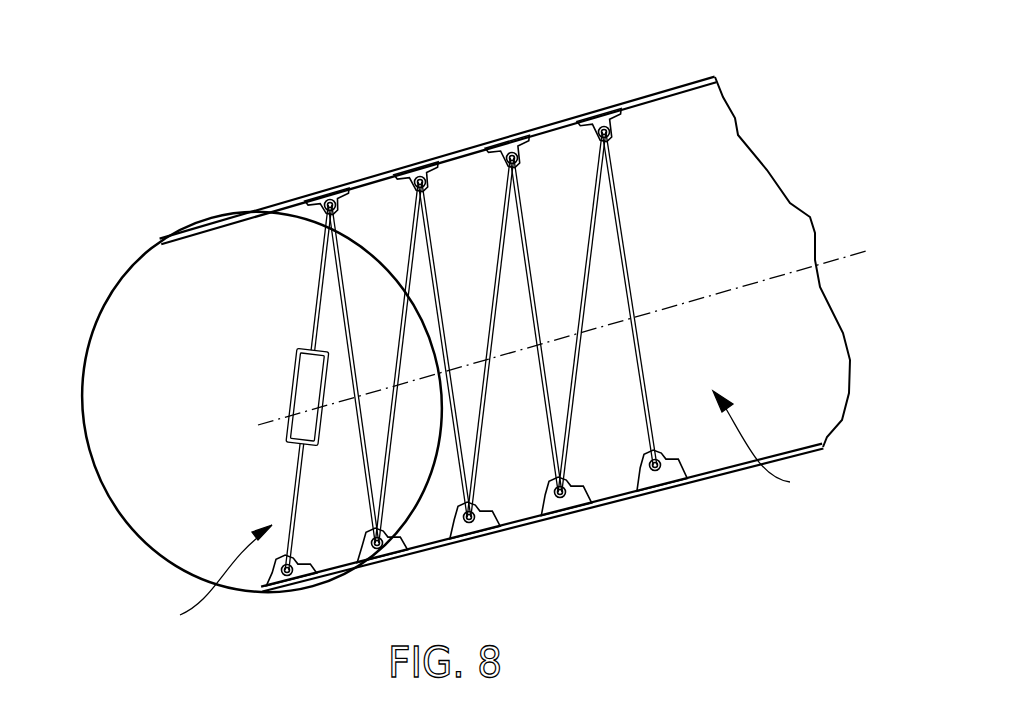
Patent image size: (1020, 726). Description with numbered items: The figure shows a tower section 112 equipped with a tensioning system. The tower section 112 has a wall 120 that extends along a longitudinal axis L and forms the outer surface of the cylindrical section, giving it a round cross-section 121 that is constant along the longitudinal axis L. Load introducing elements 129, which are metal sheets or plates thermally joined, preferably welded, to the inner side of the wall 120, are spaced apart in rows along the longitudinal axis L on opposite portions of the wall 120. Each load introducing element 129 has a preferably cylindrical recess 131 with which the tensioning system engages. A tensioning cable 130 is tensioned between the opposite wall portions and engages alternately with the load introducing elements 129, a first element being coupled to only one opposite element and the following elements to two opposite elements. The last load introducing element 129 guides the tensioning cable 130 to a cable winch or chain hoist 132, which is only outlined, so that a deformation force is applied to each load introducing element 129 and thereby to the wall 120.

The tower section 112 is at (782, 446).
The wall 120 is at (750, 225).
The round cross-section 121 is at (210, 265).
The load introducing elements 129 is at (312, 190).
The tensioning cable 130 is at (197, 579).
The recesses 131 is at (632, 497).
The cable winch or chain hoist 132 is at (290, 408).
The longitudinal axis L is at (690, 297).